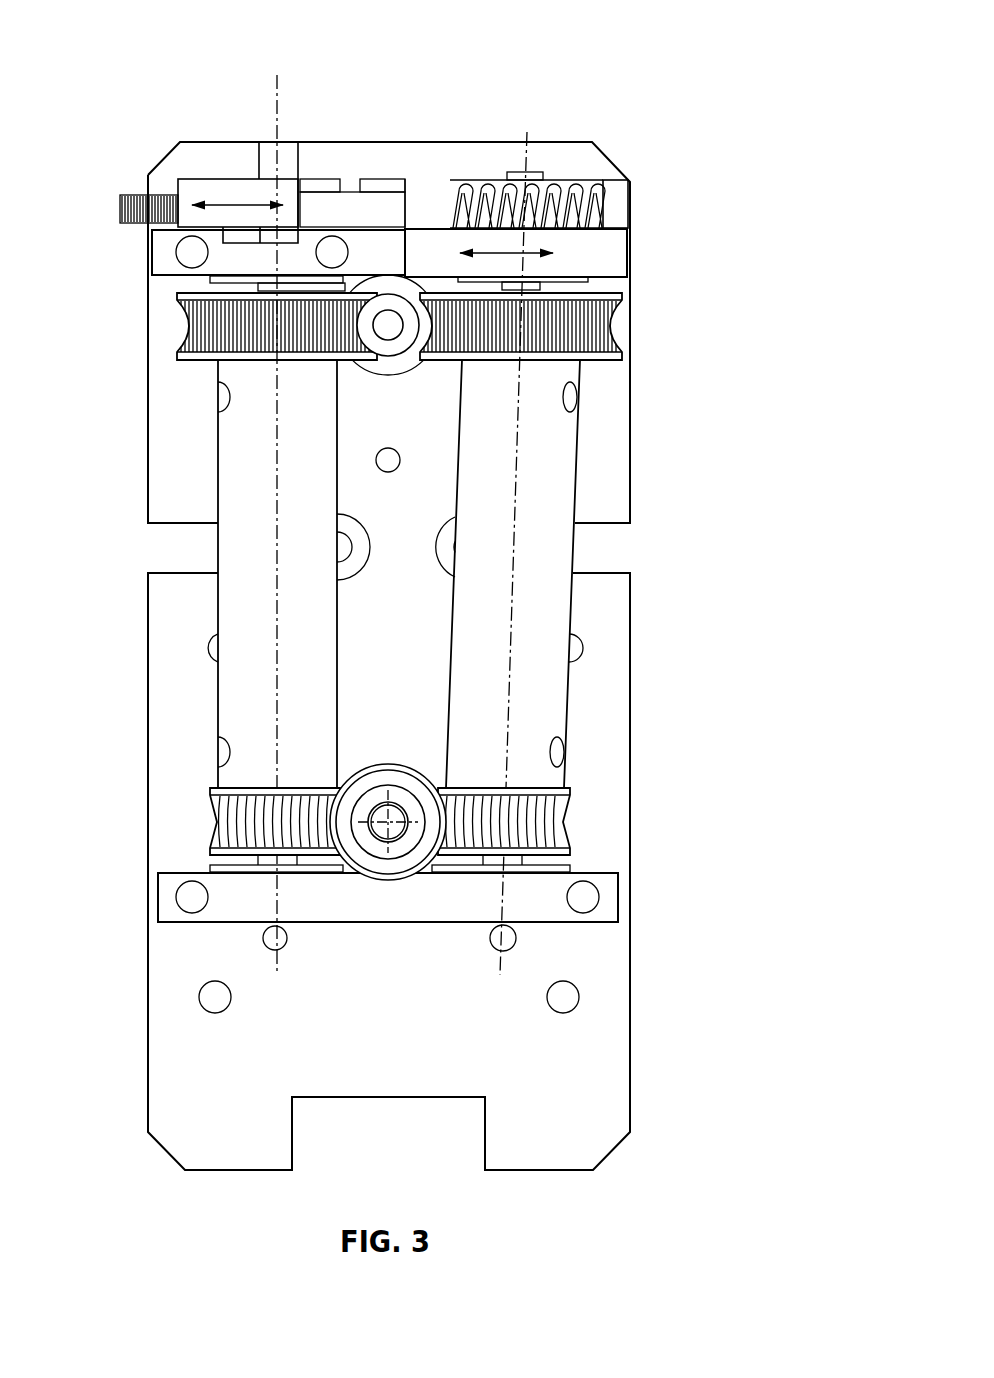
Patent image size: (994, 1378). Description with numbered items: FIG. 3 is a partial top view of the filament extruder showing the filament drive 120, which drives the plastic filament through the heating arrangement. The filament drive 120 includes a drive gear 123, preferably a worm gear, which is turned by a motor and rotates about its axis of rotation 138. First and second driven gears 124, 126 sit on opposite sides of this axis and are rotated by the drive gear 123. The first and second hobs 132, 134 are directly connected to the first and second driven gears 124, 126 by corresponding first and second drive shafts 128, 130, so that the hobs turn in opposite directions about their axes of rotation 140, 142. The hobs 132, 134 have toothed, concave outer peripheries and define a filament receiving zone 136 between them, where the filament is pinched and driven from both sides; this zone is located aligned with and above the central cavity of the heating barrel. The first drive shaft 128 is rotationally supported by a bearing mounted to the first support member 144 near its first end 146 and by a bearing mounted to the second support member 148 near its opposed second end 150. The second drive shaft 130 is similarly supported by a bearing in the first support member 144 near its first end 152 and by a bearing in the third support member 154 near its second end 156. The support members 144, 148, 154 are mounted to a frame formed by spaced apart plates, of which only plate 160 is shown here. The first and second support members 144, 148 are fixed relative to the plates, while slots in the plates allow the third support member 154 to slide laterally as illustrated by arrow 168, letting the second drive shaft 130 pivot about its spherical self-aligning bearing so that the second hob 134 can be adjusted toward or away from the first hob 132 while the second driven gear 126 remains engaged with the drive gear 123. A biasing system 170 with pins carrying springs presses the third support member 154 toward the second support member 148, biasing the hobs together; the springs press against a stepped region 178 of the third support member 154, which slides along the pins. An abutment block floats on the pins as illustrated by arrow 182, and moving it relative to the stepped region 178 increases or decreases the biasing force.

The filament drive 120 is at (753, 767).
The drive gear 123 is at (408, 793).
The first driven gear 124 is at (227, 822).
The second driven gear 126 is at (555, 823).
The first drive shaft 128 is at (225, 548).
The second drive shaft 130 is at (562, 548).
The first hob 132 is at (205, 330).
The second hob 134 is at (613, 322).
The filament receiving zone 136 is at (419, 273).
The axis of rotation 138 is at (383, 810).
The axis of rotation 140 is at (275, 705).
The axis of rotation 142 is at (508, 705).
The first support member 144 is at (338, 902).
The first end 146 is at (168, 862).
The second support member 148 is at (158, 253).
The second end 150 is at (147, 290).
The first end 152 is at (604, 860).
The third support member 154 is at (618, 248).
The second end 156 is at (630, 281).
The plate 160 is at (205, 1108).
The arrow 168 is at (498, 250).
The biasing system 170 is at (315, 100).
The stepped region 178 is at (389, 182).
The arrow 182 is at (233, 203).